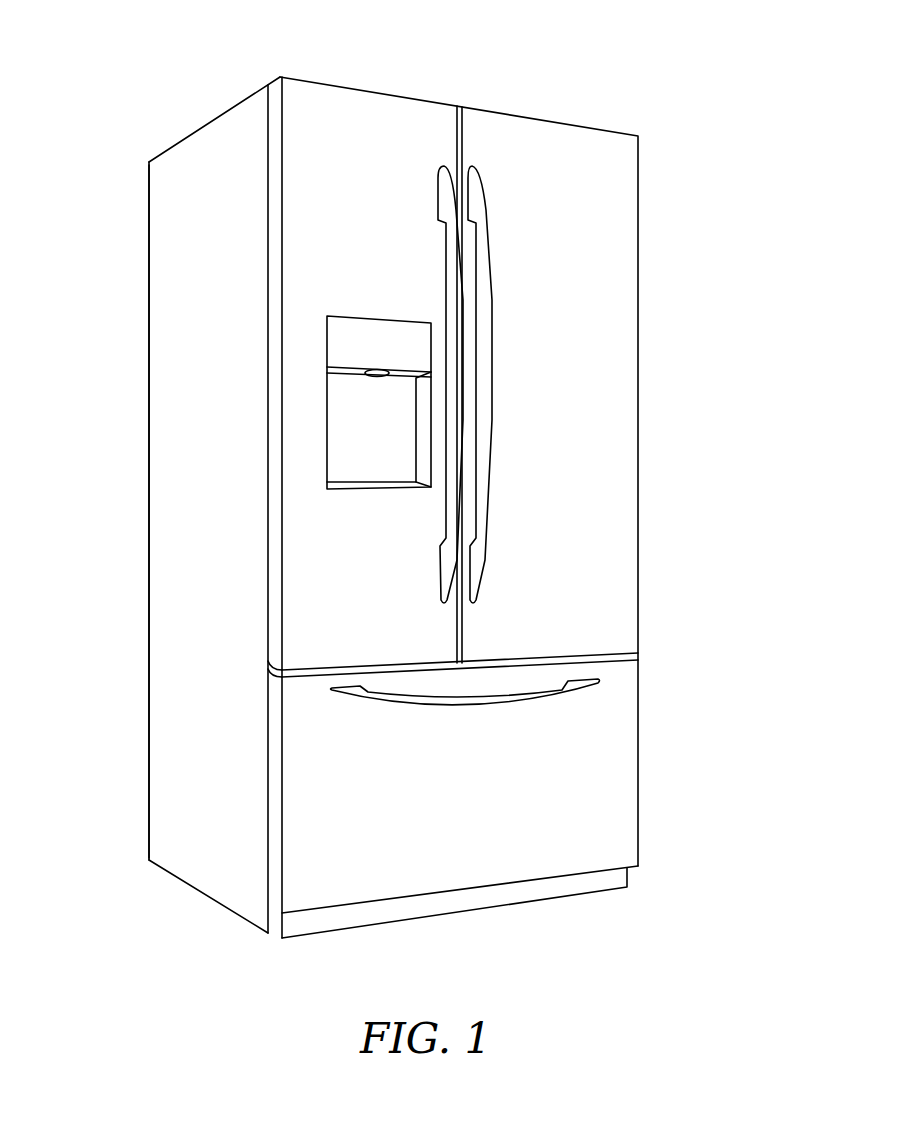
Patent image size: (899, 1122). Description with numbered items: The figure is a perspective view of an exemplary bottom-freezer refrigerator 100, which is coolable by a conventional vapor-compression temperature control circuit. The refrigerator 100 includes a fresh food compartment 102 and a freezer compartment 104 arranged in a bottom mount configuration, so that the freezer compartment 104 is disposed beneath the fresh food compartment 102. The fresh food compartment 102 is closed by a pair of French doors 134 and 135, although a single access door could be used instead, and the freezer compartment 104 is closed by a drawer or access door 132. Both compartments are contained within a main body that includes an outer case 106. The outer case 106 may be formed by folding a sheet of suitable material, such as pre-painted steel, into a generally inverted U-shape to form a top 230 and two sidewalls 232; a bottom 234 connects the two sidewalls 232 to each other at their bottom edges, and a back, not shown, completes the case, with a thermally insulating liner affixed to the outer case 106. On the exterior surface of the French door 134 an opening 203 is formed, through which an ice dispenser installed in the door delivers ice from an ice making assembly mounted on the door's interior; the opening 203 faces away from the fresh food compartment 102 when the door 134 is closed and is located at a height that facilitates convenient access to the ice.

The refrigerator 100 is at (552, 80).
The fresh food compartment 102 is at (670, 145).
The freezer compartment 104 is at (670, 657).
The outer case 106 is at (128, 230).
The drawer or access door 132 is at (491, 803).
The French door 134 is at (371, 294).
The French door 135 is at (556, 294).
The opening 203 is at (377, 378).
The top 230 is at (192, 133).
The sidewalls 232 is at (175, 390).
The bottom 234 is at (208, 897).